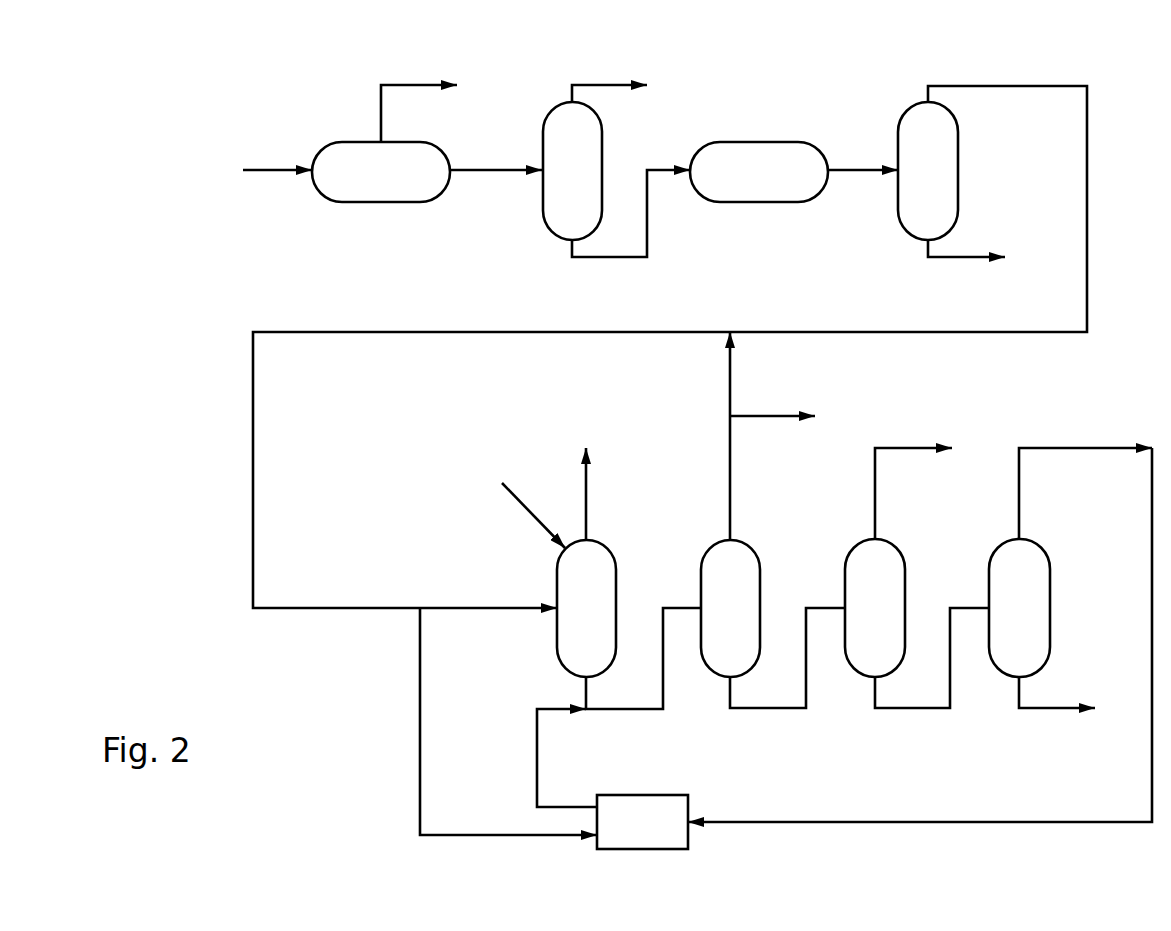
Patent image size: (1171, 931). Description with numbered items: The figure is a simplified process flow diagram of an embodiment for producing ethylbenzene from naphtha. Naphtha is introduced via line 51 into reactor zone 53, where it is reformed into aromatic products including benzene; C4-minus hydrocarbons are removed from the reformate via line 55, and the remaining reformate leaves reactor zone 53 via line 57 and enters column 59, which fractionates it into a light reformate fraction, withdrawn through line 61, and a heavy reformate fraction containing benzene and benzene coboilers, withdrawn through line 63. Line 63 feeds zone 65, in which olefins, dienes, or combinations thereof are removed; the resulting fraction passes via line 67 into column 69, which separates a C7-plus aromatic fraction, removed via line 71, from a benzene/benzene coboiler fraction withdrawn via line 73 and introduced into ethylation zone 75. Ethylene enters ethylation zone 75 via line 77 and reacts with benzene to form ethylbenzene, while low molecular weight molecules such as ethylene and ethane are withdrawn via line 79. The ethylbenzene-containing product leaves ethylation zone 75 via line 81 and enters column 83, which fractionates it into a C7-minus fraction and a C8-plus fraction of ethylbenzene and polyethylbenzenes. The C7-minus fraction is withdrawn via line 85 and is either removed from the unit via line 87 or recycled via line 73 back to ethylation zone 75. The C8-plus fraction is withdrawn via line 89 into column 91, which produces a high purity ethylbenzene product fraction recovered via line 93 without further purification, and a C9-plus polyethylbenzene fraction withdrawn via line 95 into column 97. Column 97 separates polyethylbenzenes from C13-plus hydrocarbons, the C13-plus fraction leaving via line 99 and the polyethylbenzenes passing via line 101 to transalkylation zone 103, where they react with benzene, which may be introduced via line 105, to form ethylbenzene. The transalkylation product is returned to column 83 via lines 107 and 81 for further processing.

The line 51 is at (275, 139).
The reactor zone 53 is at (385, 191).
The line 55 is at (427, 94).
The line 57 is at (496, 139).
The column 59 is at (605, 171).
The line 61 is at (620, 74).
The line 63 is at (652, 216).
The zone 65 is at (759, 151).
The line 67 is at (848, 206).
The column 69 is at (964, 171).
The line 71 is at (979, 235).
The line 73 is at (670, 326).
The ethylation zone 75 is at (610, 592).
The line 77 is at (516, 515).
The line 79 is at (622, 494).
The line 81 is at (643, 683).
The column 83 is at (753, 592).
The line 85 is at (768, 436).
The line 87 is at (779, 393).
The line 89 is at (787, 683).
The column 91 is at (898, 591).
The line 93 is at (923, 470).
The line 95 is at (932, 683).
The column 97 is at (1041, 591).
The line 99 is at (1057, 718).
The line 101 is at (920, 611).
The transalkylation zone 103 is at (691, 812).
The line 105 is at (472, 721).
The line 107 is at (524, 758).